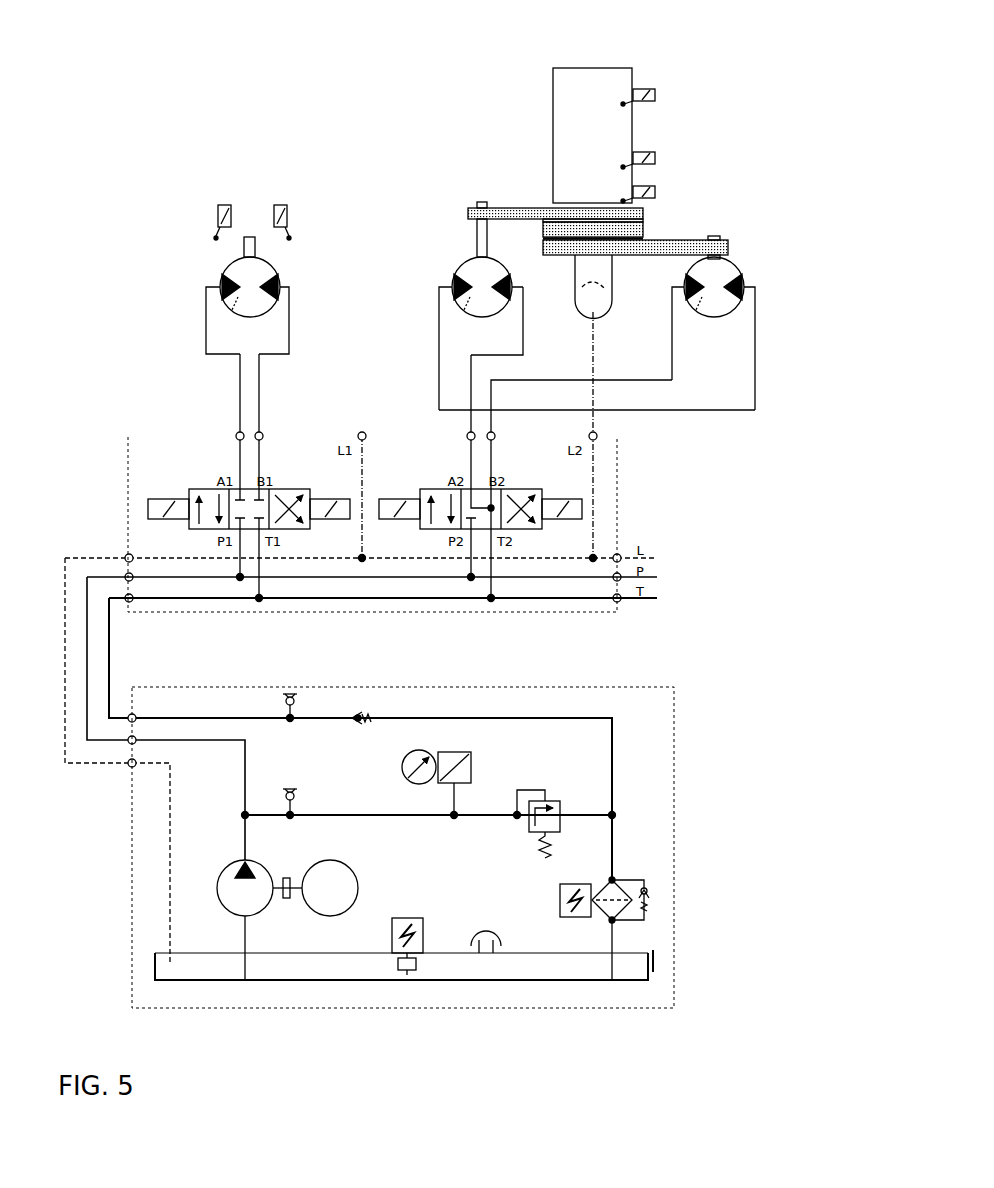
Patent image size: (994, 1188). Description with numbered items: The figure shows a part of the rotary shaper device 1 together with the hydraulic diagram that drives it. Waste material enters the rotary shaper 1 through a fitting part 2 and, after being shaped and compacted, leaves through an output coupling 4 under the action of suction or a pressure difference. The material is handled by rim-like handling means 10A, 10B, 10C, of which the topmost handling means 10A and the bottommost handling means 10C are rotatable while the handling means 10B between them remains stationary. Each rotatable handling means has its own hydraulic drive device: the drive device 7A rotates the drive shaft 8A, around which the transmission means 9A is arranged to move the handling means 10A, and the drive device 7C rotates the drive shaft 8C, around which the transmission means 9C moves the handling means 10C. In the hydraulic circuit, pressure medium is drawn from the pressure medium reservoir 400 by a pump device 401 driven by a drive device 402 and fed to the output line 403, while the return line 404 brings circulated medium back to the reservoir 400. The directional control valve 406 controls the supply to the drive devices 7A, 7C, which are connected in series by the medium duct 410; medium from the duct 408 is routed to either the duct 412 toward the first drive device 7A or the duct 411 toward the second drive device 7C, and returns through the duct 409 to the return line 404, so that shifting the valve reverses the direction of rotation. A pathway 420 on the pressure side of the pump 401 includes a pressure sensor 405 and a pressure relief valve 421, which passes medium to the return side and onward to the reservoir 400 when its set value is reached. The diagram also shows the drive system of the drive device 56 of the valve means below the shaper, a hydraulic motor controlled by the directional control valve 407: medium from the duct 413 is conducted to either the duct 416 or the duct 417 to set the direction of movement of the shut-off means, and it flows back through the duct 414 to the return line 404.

The rotary shaper device 1 is at (485, 180).
The fitting part 2 is at (568, 105).
The output coupling 4 is at (588, 282).
The drive device 7A is at (486, 277).
The drive shaft 8A is at (485, 239).
The transmission means 9A is at (523, 212).
The handling means 10A is at (648, 210).
The handling means 10B is at (640, 222).
The handling means 10C is at (632, 243).
The drive device 7C is at (728, 272).
The drive shaft 8C is at (720, 256).
The transmission means 9C is at (730, 246).
The drive device of the valve 56 is at (225, 287).
The pressure medium reservoir 400 is at (632, 963).
The pump device 401 is at (228, 895).
The drive device 402 is at (344, 890).
The output line 403 is at (93, 665).
The return line 404 is at (110, 683).
The pressure sensor 405 is at (472, 762).
The directional control valve 406 is at (540, 492).
The directional control valve 407 is at (190, 492).
The duct 408 is at (468, 543).
The duct 409 is at (492, 563).
The medium duct 410 is at (722, 410).
The duct 411 is at (672, 357).
The duct 412 is at (522, 313).
The duct 413 is at (237, 545).
The duct 414 is at (257, 560).
The duct 416 is at (240, 362).
The duct 417 is at (262, 358).
The pathway of the medium 420 is at (400, 815).
The pressure relief valve 421 is at (560, 815).